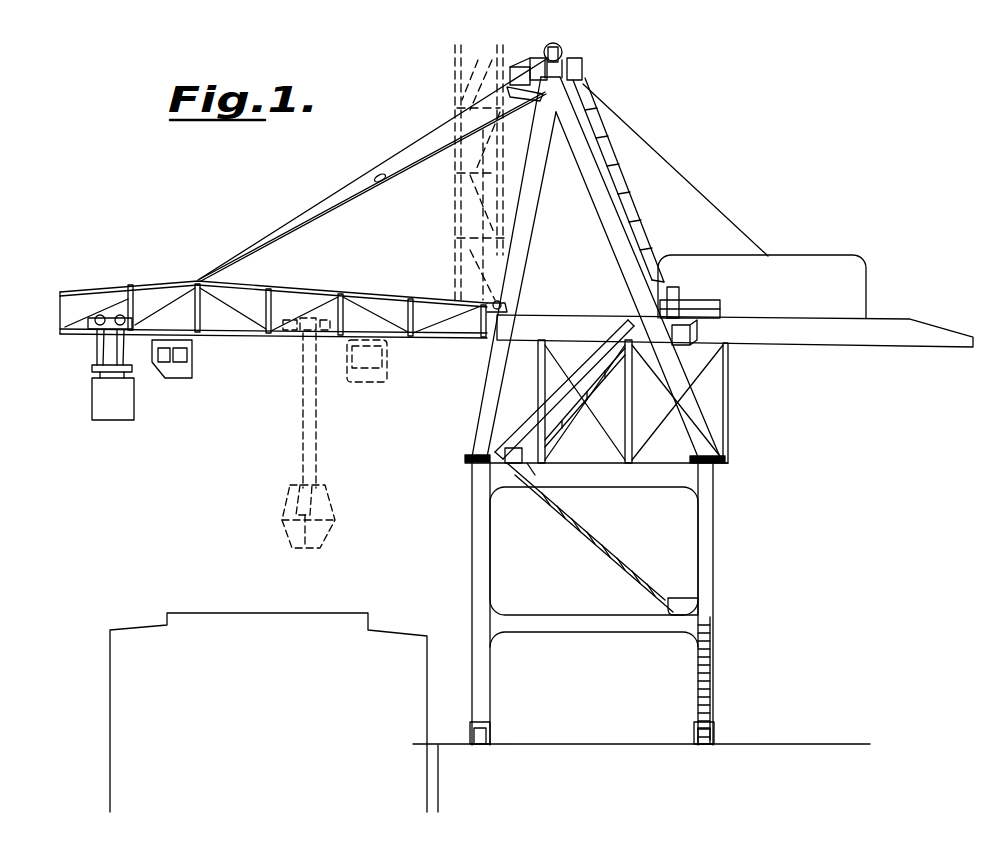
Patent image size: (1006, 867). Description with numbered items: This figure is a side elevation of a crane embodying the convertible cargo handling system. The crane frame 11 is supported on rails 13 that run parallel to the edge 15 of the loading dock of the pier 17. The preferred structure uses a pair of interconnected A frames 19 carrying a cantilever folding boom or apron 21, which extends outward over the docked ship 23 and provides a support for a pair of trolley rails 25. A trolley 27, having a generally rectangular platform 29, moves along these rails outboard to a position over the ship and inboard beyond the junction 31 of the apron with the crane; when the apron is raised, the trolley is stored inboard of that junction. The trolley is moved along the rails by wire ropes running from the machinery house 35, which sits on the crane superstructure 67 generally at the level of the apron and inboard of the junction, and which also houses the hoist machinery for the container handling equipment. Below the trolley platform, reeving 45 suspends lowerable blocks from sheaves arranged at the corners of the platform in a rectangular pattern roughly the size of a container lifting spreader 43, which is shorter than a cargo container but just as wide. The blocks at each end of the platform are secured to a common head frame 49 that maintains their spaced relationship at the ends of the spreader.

The crane frame 11 is at (560, 557).
The rails 13 is at (488, 741).
The edge 15 is at (432, 745).
The pier 17 is at (766, 790).
The A frames 19 is at (600, 150).
The apron 21 is at (148, 282).
The ship 23 is at (266, 700).
The trolley rails 25 is at (213, 328).
The trolley 27 is at (87, 333).
The platform 29 is at (117, 318).
The junction 31 is at (501, 304).
The machinery house 35 is at (799, 297).
The spreader 43 is at (90, 386).
The reeving 45 is at (128, 355).
The head frame 49 is at (92, 368).
The crane superstructure 67 is at (580, 268).